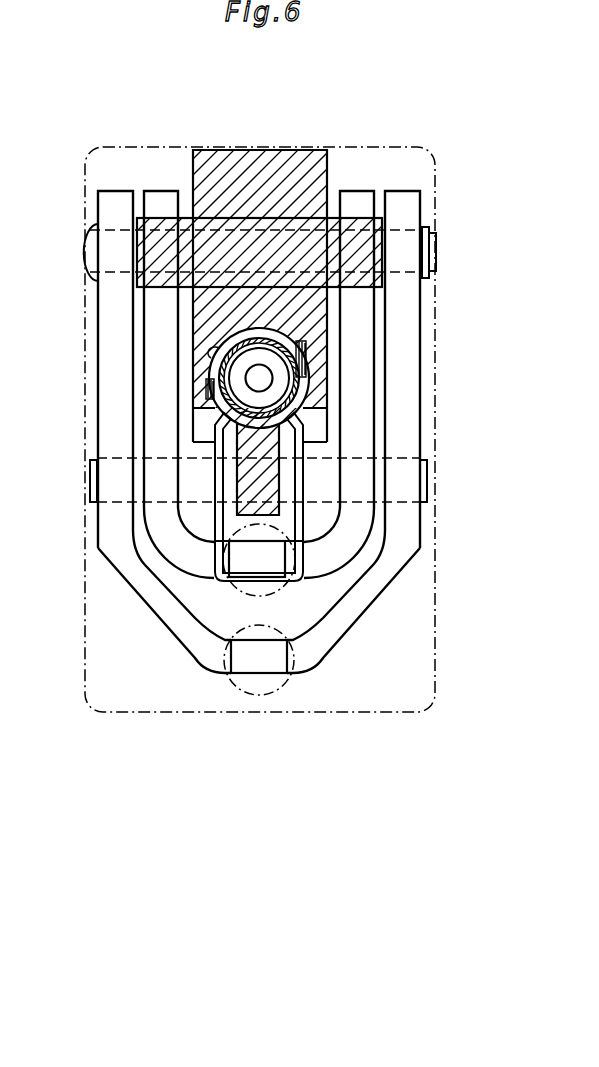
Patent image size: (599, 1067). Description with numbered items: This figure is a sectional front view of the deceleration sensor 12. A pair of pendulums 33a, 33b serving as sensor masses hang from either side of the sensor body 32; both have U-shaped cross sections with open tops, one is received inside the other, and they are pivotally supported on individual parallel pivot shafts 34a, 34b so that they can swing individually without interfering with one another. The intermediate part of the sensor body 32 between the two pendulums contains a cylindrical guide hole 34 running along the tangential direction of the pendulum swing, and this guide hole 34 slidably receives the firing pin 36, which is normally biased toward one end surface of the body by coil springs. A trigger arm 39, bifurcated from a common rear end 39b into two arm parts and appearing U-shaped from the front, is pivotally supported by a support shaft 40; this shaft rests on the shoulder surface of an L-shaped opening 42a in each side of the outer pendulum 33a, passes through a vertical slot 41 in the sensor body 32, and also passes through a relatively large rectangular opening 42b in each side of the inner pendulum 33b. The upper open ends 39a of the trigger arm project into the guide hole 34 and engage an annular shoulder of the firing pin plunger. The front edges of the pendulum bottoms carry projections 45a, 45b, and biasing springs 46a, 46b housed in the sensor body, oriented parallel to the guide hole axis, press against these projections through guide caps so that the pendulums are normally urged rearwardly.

The deceleration sensor 12 is at (414, 121).
The sensor body 32 is at (257, 150).
The outer pendulum 33a is at (415, 307).
The inner pendulum 33b is at (370, 346).
The guide hole 34 is at (212, 353).
The pivot shaft 34a is at (428, 252).
The pivot shaft 34b is at (355, 228).
The firing pin 36 is at (205, 383).
The trigger arm 39 is at (210, 524).
The upper open ends 39a is at (230, 412).
The common rear end 39b is at (240, 581).
The support shaft 40 is at (212, 512).
The vertical slot 41 is at (245, 470).
The L-shaped opening 42a is at (402, 527).
The rectangular opening 42b is at (350, 528).
The projection 45a is at (267, 670).
The projection 45b is at (283, 562).
The biasing spring 46a is at (244, 683).
The biasing spring 46b is at (283, 572).